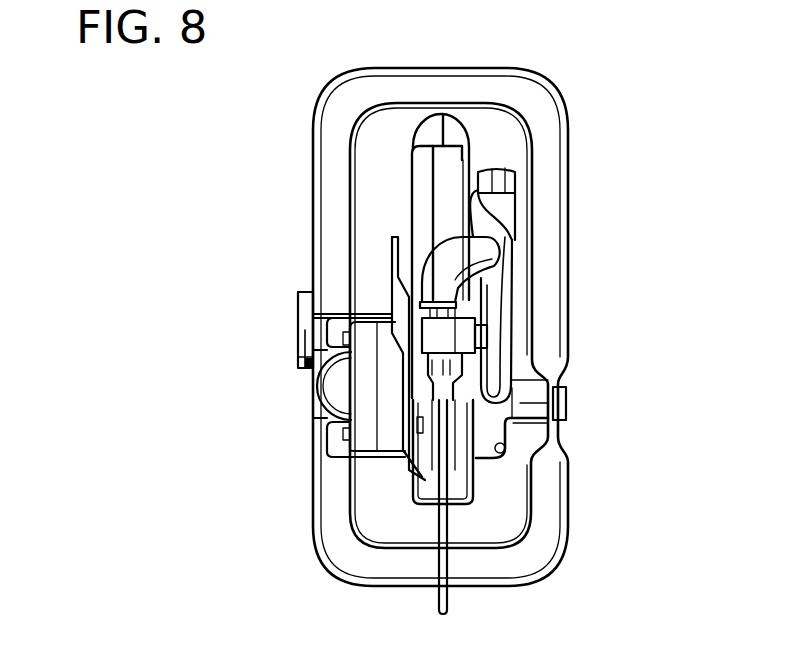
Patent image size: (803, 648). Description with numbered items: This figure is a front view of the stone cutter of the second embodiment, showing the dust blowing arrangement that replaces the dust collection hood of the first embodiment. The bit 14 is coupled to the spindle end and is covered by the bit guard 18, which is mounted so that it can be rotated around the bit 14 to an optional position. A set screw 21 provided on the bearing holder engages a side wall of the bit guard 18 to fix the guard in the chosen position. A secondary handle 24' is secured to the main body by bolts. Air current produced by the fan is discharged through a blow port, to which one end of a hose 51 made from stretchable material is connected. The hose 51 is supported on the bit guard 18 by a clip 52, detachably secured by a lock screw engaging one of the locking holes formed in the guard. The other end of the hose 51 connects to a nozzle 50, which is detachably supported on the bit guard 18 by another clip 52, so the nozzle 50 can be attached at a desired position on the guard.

The secondary handle 24' is at (486, 327).
The bit guard 18 is at (418, 216).
The clip 52 is at (505, 193).
The hose 51 is at (492, 340).
The nozzle 50 is at (450, 368).
The set screw 21 is at (298, 333).
The bit 14 is at (448, 605).